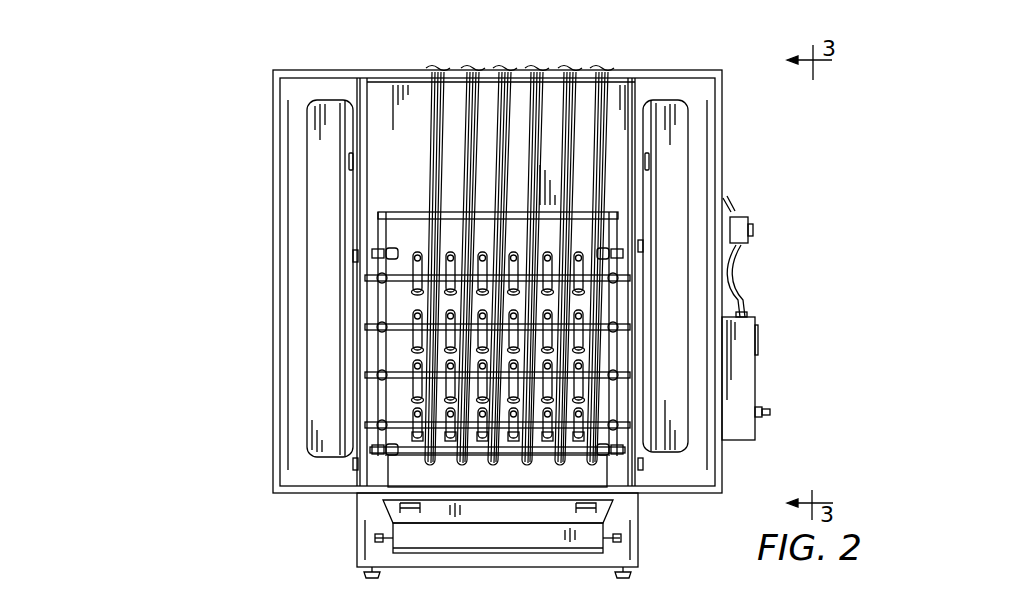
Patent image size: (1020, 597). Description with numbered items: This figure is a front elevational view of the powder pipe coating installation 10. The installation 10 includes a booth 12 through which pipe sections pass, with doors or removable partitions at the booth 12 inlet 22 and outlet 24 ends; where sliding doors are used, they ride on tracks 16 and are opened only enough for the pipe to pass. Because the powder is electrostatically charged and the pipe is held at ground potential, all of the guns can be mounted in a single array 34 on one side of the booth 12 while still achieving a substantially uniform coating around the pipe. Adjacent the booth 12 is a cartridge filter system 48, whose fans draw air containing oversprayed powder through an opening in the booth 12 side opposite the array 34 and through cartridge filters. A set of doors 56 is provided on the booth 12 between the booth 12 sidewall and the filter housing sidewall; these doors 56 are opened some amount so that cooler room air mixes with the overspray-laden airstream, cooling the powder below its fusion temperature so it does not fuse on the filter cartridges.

The powder pipe coating installation 10 is at (110, 453).
The booth 12 is at (586, 68).
The tracks 16 is at (355, 258).
The inlet end 22 is at (650, 287).
The outlet end 24 is at (344, 357).
The array 34 is at (366, 394).
The cartridge filter system 48 is at (675, 60).
The doors 56 is at (335, 182).